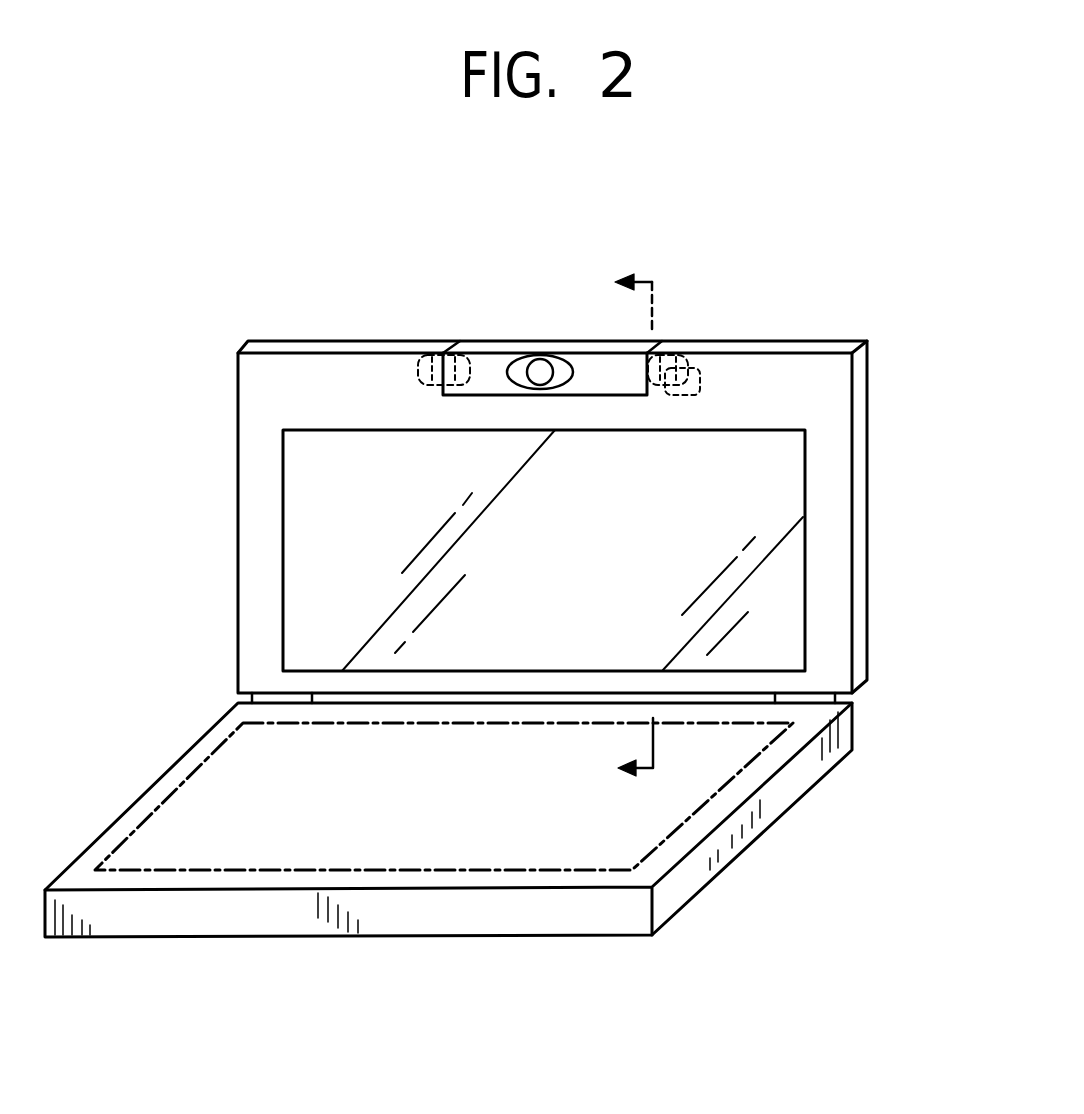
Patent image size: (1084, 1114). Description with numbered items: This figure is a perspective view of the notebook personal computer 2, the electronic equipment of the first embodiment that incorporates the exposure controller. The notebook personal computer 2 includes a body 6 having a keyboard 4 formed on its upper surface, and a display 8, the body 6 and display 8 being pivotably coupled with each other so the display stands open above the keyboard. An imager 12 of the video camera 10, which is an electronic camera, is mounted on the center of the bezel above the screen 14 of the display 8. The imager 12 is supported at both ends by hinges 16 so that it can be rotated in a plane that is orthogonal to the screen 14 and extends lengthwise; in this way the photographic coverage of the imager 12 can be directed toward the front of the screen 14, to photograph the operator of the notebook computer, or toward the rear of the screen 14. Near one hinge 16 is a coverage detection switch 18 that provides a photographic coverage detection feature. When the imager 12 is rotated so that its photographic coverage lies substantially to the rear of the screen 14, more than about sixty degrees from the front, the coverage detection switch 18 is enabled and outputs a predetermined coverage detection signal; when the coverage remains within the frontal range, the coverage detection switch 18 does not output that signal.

The notebook personal computer 2 is at (160, 432).
The keyboard 4 is at (733, 778).
The body 6 is at (675, 892).
The display 8 is at (858, 553).
The video camera 10 is at (541, 333).
The imager 12 is at (498, 350).
The screen 14 is at (765, 485).
The hinges 16 is at (440, 355).
The coverage detection switch 18 is at (700, 372).